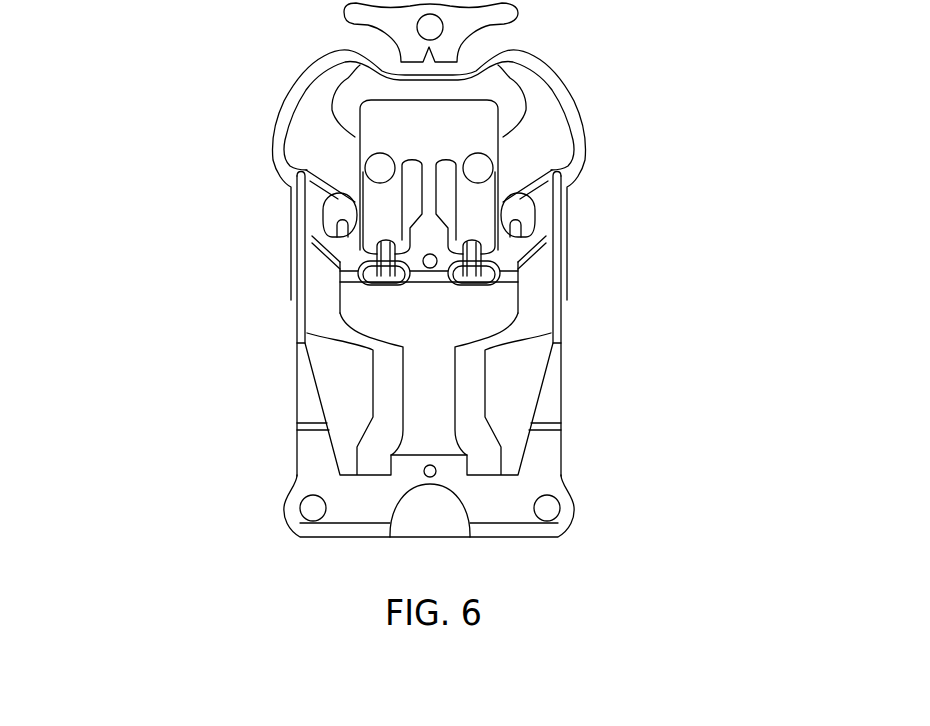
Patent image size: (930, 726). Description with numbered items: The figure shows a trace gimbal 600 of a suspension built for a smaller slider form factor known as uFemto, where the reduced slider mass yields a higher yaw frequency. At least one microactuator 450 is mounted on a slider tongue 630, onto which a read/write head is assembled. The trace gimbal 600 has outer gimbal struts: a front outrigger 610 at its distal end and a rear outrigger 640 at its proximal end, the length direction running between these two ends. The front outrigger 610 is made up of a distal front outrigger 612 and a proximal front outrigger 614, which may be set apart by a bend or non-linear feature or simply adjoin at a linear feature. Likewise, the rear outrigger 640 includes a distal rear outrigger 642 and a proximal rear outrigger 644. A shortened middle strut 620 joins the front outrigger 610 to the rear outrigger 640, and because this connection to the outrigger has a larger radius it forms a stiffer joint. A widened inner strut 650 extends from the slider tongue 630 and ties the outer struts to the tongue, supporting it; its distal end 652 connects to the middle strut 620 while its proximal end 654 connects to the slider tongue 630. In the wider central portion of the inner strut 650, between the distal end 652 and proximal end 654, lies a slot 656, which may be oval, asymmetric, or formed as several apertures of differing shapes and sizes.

The trace gimbal 600 is at (421, 270).
The microactuator 450 is at (385, 203).
The front outrigger 610 is at (527, 158).
The distal front outrigger 612 is at (537, 67).
The proximal front outrigger 614 is at (583, 127).
The middle strut 620 is at (560, 163).
The slider tongue 630 is at (417, 255).
The rear outrigger 640 is at (508, 355).
The distal rear outrigger 642 is at (565, 308).
The proximal rear outrigger 644 is at (565, 373).
The inner strut 650 is at (560, 230).
The distal end of the inner strut 652 is at (543, 195).
The proximal end of the inner strut 654 is at (515, 256).
The slot 656 is at (524, 215).